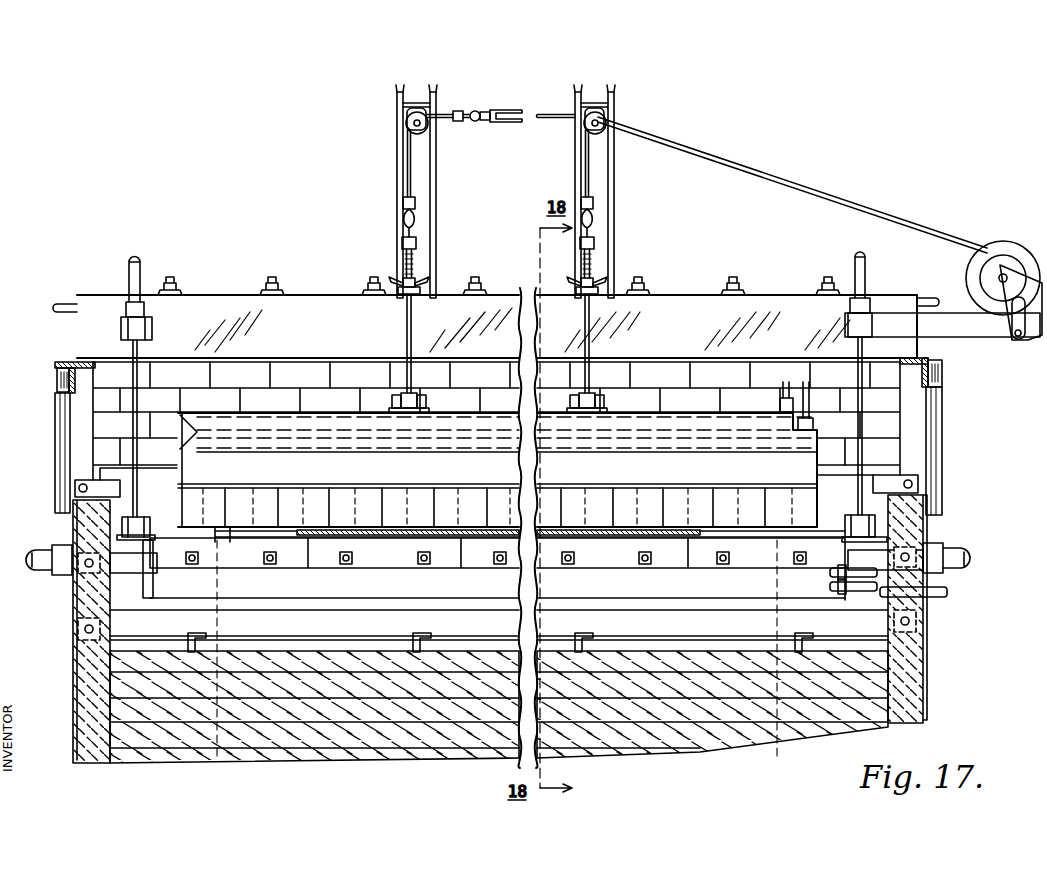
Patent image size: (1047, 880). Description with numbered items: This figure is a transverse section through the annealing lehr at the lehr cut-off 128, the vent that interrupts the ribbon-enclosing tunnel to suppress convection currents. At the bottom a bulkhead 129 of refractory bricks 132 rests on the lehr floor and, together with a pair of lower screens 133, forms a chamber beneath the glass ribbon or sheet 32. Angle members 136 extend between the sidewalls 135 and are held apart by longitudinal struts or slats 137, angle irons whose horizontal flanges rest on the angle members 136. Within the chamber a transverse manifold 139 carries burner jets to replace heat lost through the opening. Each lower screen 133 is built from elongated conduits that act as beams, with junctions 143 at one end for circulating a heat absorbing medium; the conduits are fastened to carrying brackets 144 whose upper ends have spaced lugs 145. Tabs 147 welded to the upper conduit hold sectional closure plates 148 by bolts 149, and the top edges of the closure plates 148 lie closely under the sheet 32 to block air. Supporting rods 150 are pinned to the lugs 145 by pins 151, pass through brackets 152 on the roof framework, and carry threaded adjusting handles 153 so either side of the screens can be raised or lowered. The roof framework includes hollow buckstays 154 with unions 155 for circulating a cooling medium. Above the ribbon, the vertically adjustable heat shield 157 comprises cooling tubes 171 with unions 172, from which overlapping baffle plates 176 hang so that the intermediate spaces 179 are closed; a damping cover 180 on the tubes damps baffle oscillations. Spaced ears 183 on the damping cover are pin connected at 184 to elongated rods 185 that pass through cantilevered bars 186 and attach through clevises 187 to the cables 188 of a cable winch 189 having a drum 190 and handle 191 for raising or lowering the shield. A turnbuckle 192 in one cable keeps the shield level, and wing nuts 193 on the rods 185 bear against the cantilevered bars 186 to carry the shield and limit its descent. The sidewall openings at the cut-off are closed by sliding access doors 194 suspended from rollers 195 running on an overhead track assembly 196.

The ribbon or sheet 32 is at (440, 528).
The lehr cut-off 128 is at (332, 256).
The bulkhead 129 is at (123, 691).
The refractory bricks 132 is at (120, 738).
The lower screens 133 is at (368, 590).
The sidewalls 135 is at (75, 658).
The angle members 136 is at (870, 625).
The struts or slats 137 is at (190, 636).
The manifold 139 is at (945, 592).
The junctions 143 is at (830, 587).
The carrying brackets 144 is at (146, 590).
The spaced lugs 145 is at (862, 512).
The tabs 147 is at (638, 558).
The closure plates 148 is at (478, 550).
The bolts 149 is at (568, 564).
The supporting rods 150 is at (132, 357).
The pins 151 is at (141, 532).
The brackets 152 is at (122, 326).
The adjusting handles 153 is at (136, 270).
The hollow buckstays 154 is at (289, 322).
The unions 155 is at (62, 302).
The heat shield 157 is at (695, 434).
The cooling tubes 171 is at (264, 440).
The unions 172 is at (806, 394).
The baffle plates 176 is at (193, 505).
The intermediate spaces 179 is at (278, 505).
The damping cover 180 is at (186, 466).
The spaced ears 183 is at (395, 406).
The pin connection 184 is at (400, 395).
The elongated rods 185 is at (410, 346).
The cantilevered bars 186 is at (404, 293).
The clevises 187 is at (422, 246).
The cables 188 is at (772, 180).
The cable winch 189 is at (461, 214).
The drum 190 is at (1001, 258).
The handle 191 is at (1018, 340).
The turnbuckle 192 is at (504, 112).
The wing nuts 193 is at (394, 281).
The sliding access doors 194 is at (66, 427).
The rollers 195 is at (60, 372).
The overhead track assembly 196 is at (57, 392).